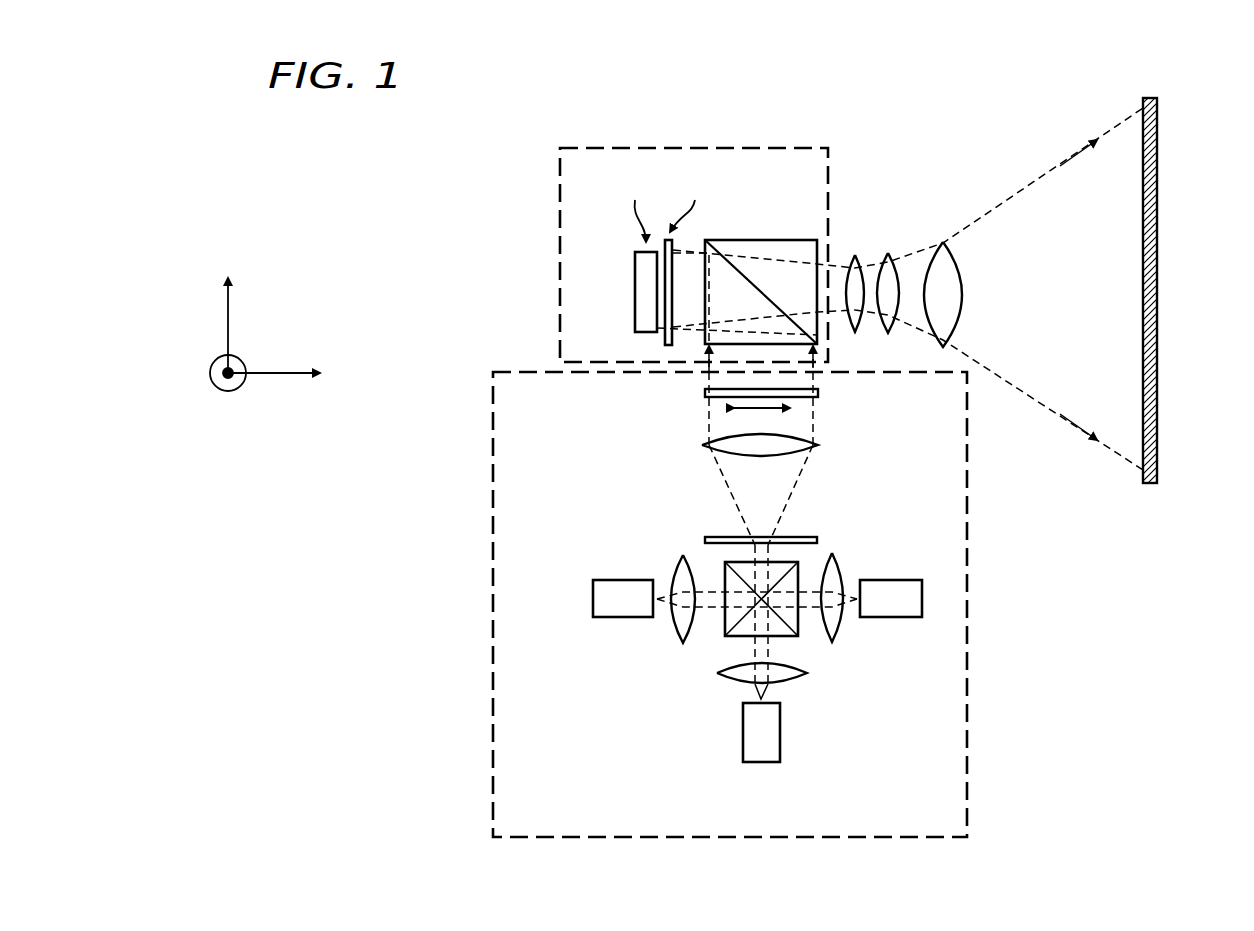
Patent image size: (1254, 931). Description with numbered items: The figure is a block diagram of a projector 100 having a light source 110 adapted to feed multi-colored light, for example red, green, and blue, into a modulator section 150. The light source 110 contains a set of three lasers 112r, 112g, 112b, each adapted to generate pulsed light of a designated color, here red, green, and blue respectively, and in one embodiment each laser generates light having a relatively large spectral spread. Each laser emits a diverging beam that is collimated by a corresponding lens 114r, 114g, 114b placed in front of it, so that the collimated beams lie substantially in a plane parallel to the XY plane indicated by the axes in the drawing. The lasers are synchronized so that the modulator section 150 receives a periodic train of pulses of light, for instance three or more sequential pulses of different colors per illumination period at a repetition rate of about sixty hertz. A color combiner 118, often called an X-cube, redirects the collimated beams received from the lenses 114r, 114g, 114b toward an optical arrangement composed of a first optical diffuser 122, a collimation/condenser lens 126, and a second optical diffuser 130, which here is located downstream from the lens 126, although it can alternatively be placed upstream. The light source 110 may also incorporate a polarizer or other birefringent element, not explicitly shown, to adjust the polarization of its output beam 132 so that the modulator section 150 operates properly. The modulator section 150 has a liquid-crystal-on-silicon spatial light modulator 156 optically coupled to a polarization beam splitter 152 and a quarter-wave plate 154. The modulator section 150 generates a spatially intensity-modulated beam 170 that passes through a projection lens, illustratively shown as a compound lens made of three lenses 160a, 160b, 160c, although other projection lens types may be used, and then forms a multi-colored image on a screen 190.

The projector 100 is at (350, 137).
The light source 110 is at (493, 478).
The laser 112g is at (592, 598).
The laser 112r is at (893, 617).
The laser 112b is at (761, 762).
The lens 114g is at (676, 630).
The lens 114r is at (840, 566).
The lens 114b is at (732, 681).
The color combiner 118 is at (803, 645).
The first optical diffuser 122 is at (706, 537).
The collimation/condenser lens 126 is at (820, 445).
The second optical diffuser 130 is at (820, 393).
The output beam 132 is at (707, 378).
The modulator section 150 is at (560, 222).
The polarization beam splitter 152 is at (795, 240).
The quarter-wave plate 154 is at (668, 344).
The LCOS spatial light modulator 156 is at (635, 292).
The lens 160a is at (855, 255).
The lens 160b is at (888, 253).
The lens 160c is at (943, 242).
The spatially intensity-modulated beam 170 is at (1070, 152).
The screen 190 is at (1158, 258).